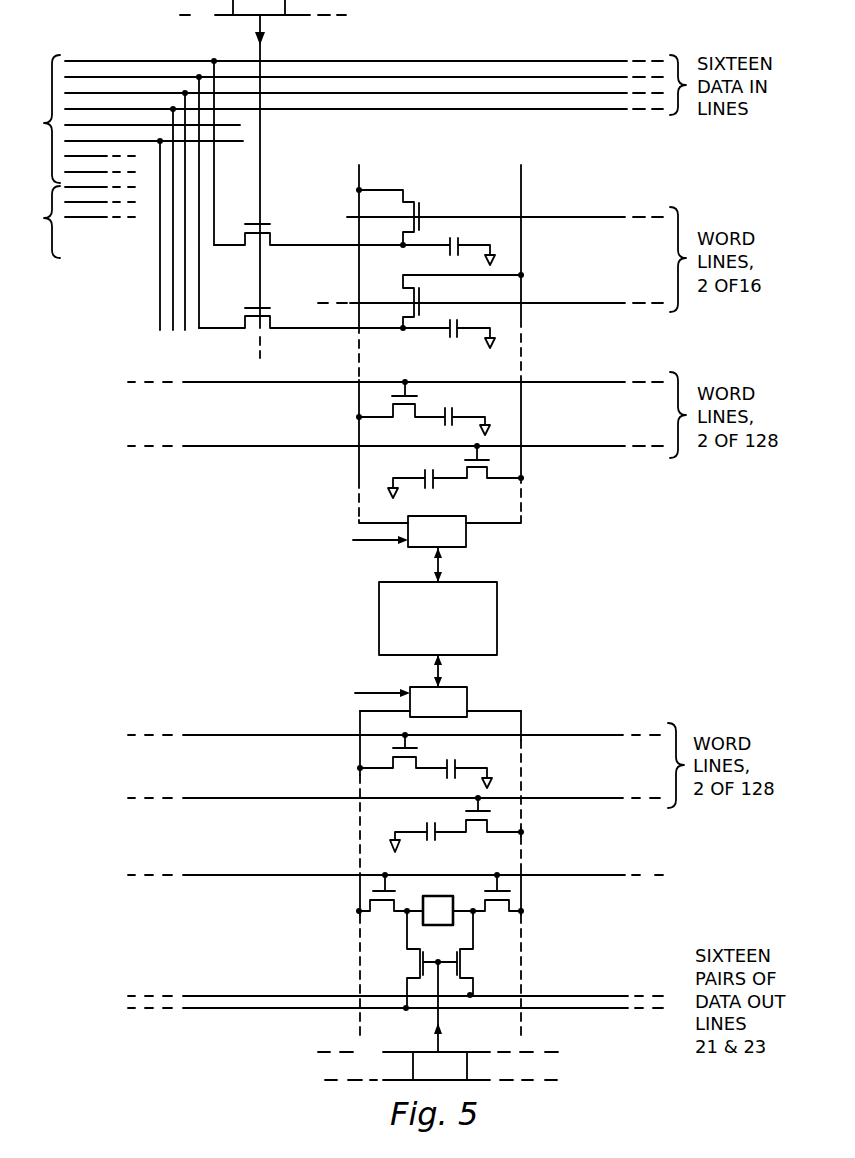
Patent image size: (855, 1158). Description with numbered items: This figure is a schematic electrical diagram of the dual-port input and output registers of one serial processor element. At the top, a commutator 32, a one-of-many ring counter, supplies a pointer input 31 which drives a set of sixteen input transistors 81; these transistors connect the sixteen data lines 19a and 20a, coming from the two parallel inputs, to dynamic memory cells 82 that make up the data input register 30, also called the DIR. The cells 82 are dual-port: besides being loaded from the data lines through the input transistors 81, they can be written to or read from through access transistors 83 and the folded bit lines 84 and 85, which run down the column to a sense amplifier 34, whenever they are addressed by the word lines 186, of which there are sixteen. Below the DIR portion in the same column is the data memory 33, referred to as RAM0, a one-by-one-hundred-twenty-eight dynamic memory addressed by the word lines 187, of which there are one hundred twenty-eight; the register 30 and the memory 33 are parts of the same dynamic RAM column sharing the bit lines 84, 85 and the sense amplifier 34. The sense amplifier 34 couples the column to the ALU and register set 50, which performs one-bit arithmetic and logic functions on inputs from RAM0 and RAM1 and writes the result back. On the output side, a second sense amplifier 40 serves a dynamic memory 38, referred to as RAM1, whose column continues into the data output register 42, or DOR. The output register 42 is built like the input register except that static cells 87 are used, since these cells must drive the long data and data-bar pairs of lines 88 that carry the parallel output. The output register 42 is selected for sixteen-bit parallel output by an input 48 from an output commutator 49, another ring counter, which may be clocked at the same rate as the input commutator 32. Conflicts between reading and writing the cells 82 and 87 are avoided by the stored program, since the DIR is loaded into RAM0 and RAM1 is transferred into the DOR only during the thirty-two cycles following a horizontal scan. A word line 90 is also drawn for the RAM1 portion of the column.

The data lines 19a is at (333, 192).
The data lines 20a is at (68, 222).
The data input register 30 is at (548, 185).
The pointer input 31 is at (264, 30).
The commutator 32 is at (192, 26).
The data memory 33 is at (592, 482).
The sense amplifier 34 is at (466, 530).
The dynamic memory 38 is at (545, 708).
The sense amplifier 40 is at (422, 687).
The data output register 42 is at (571, 921).
The input 48 is at (440, 1013).
The commutator 49 is at (366, 1051).
The ALU and register set 50 is at (497, 590).
The input transistors 81 is at (281, 201).
The dynamic memory cells 82 is at (457, 234).
The access transistors 83 is at (418, 202).
The folded bit line 84 is at (355, 393).
The folded bit line 85 is at (521, 318).
The static cells 87 is at (456, 896).
The data and data-bar lines 88 is at (552, 1007).
The word line 90 is at (593, 733).
The word lines 186 is at (588, 215).
The word lines 187 is at (600, 381).